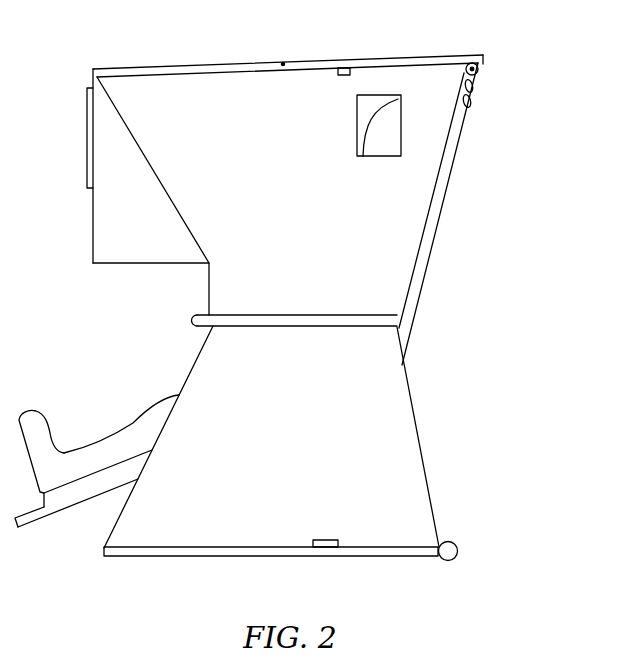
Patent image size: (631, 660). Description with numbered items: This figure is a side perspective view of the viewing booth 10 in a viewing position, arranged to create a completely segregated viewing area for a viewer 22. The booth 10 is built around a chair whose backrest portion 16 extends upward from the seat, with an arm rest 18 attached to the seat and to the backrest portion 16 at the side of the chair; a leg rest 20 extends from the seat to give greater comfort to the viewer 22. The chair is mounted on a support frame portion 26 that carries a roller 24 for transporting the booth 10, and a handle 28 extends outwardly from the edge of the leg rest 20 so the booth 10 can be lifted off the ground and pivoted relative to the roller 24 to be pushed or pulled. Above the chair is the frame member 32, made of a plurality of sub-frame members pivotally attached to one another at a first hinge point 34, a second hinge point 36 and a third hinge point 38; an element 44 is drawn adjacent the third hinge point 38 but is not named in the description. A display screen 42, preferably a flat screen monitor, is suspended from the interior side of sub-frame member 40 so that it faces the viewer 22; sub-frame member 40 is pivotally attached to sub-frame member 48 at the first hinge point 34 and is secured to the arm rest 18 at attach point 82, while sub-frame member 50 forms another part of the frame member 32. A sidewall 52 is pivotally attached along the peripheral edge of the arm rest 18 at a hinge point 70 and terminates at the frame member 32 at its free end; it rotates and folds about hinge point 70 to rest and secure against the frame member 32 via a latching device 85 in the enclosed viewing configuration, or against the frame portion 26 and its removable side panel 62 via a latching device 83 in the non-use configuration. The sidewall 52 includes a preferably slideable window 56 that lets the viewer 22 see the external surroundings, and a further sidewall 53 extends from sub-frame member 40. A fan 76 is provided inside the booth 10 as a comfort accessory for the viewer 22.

The viewing booth 10 is at (545, 240).
The backrest portion 16 is at (423, 318).
The arm rest 18 is at (200, 328).
The leg rest 20 is at (82, 508).
The viewer 22 is at (385, 140).
The roller 24 is at (458, 553).
The support frame portion 26 is at (165, 558).
The handle 28 is at (27, 528).
The frame member 32 is at (238, 62).
The first hinge point 34 is at (96, 70).
The second hinge point 36 is at (283, 62).
The third hinge point 38 is at (483, 58).
The sub-frame member 40 is at (100, 263).
The display screen 42 is at (95, 162).
The hinge pin 44 is at (478, 72).
The sub-frame member 48 is at (165, 66).
The sub-frame member 50 is at (390, 60).
The sidewall 52 is at (296, 226).
The sidewall 53 is at (105, 247).
The window 56 is at (357, 112).
The side panel 62 is at (410, 483).
The hinge point 70 is at (320, 313).
The fan 76 is at (472, 95).
The attach point 82 is at (197, 318).
The latching device 83 is at (313, 538).
The latching device 85 is at (340, 76).